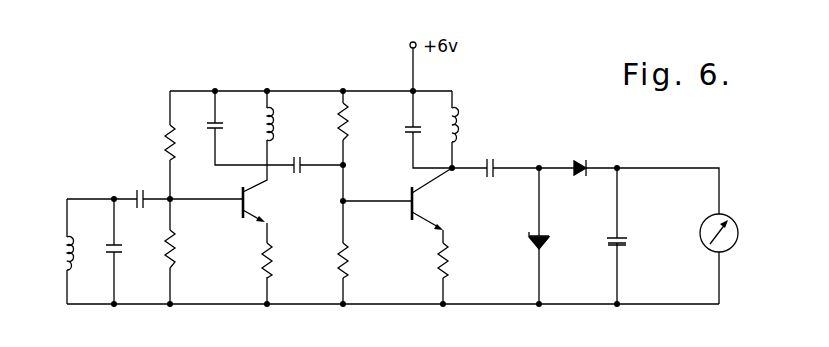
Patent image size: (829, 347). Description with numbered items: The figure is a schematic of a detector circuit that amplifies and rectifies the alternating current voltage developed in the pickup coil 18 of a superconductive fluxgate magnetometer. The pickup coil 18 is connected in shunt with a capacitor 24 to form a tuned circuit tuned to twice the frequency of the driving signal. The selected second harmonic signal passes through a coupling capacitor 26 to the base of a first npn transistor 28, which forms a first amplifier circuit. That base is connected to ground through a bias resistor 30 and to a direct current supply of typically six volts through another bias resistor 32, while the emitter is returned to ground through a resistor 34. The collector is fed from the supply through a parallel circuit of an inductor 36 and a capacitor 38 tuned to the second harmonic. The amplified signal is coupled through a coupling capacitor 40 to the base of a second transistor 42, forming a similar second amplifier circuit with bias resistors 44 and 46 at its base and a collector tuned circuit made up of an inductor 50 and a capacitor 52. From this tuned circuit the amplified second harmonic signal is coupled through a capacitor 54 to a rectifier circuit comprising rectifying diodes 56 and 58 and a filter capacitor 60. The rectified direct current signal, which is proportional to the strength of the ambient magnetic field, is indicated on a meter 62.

The pickup coil 18 is at (67, 258).
The capacitor 24 is at (120, 250).
The coupling capacitor 26 is at (138, 193).
The first npn transistor 28 is at (265, 210).
The bias resistor 30 is at (173, 258).
The bias resistor 32 is at (168, 131).
The resistor 34 is at (270, 258).
The inductor 36 is at (270, 137).
The capacitor 38 is at (220, 122).
The coupling capacitor 40 is at (302, 170).
The second transistor 42 is at (449, 206).
The bias resistor 44 is at (350, 258).
The bias resistor 46 is at (349, 134).
The inductor 50 is at (454, 112).
The capacitor 52 is at (410, 132).
The capacitor 54 is at (493, 160).
The rectifying diode 56 is at (545, 241).
The rectifying diode 58 is at (580, 162).
The filter capacitor 60 is at (621, 240).
The meter 62 is at (727, 219).